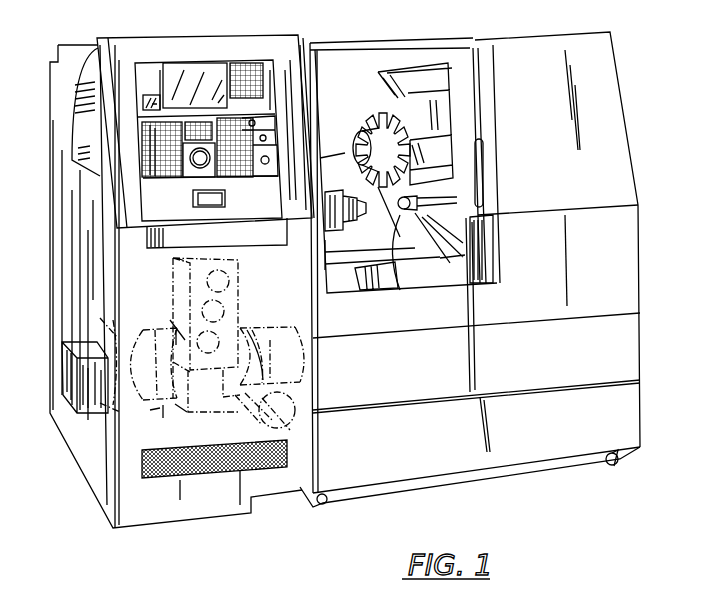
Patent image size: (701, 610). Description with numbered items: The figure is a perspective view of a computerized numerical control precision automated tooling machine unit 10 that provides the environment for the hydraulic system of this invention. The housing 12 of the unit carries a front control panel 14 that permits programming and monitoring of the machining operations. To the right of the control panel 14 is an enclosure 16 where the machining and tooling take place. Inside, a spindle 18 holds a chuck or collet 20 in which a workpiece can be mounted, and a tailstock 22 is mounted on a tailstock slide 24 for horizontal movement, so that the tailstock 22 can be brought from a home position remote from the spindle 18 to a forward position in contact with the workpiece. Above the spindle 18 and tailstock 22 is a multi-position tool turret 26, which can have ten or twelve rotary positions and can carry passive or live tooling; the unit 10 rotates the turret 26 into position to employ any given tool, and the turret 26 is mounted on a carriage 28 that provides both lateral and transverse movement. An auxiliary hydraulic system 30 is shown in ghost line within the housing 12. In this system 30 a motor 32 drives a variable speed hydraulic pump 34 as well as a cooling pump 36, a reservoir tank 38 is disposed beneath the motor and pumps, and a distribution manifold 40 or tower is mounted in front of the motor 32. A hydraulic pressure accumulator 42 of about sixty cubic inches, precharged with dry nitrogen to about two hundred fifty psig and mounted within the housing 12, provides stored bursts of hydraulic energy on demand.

The automated tooling machine unit 10 is at (300, 535).
The housing 12 is at (640, 342).
The front control panel 14 is at (147, 40).
The enclosure 16 is at (333, 72).
The spindle 18 is at (333, 190).
The chuck or collet 20 is at (366, 204).
The tailstock 22 is at (400, 288).
The tailstock slide 24 is at (462, 268).
The multi-position tool turret 26 is at (375, 75).
The carriage 28 is at (420, 73).
The auxiliary hydraulic system 30 is at (137, 440).
The motor 32 is at (158, 318).
The variable speed hydraulic pump 34 is at (290, 333).
The cooling pump 36 is at (90, 310).
The reservoir tank 38 is at (160, 415).
The distribution manifold 40 is at (236, 281).
The hydraulic pressure accumulator 42 is at (300, 392).